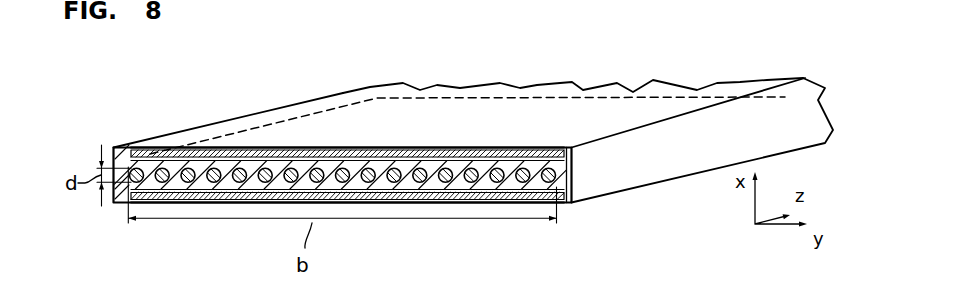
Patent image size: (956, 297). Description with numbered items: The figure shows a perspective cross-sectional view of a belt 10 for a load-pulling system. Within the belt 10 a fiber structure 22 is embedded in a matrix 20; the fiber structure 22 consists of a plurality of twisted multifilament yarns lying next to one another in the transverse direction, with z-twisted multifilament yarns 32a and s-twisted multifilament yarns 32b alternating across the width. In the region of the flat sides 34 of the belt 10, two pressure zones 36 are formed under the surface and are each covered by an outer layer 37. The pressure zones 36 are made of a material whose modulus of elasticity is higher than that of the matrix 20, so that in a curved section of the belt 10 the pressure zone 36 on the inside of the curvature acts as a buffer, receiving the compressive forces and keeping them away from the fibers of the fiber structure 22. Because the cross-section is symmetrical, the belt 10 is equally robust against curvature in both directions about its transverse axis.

The belt 10 is at (642, 62).
The matrix 20 is at (122, 198).
The fiber structure 22 is at (305, 174).
The z-twisted multifilament yarns 32a is at (135, 168).
The s-twisted multifilament yarns 32b is at (162, 170).
The flat sides 34 is at (370, 147).
The pressure zones 36 is at (407, 193).
The outer layer 37 is at (482, 200).